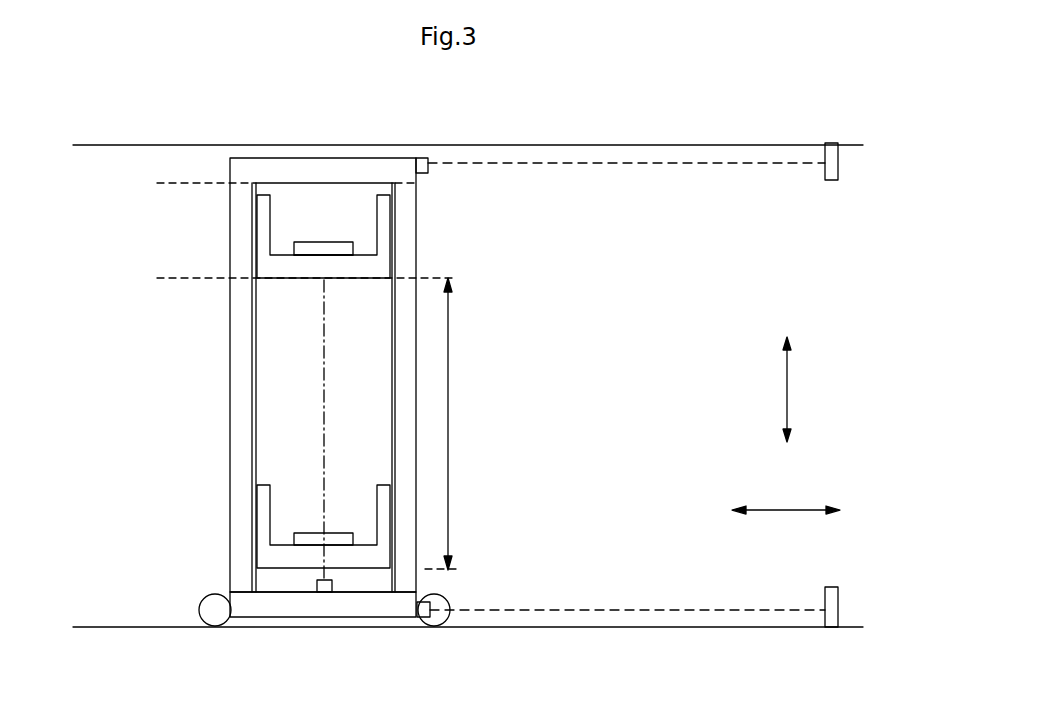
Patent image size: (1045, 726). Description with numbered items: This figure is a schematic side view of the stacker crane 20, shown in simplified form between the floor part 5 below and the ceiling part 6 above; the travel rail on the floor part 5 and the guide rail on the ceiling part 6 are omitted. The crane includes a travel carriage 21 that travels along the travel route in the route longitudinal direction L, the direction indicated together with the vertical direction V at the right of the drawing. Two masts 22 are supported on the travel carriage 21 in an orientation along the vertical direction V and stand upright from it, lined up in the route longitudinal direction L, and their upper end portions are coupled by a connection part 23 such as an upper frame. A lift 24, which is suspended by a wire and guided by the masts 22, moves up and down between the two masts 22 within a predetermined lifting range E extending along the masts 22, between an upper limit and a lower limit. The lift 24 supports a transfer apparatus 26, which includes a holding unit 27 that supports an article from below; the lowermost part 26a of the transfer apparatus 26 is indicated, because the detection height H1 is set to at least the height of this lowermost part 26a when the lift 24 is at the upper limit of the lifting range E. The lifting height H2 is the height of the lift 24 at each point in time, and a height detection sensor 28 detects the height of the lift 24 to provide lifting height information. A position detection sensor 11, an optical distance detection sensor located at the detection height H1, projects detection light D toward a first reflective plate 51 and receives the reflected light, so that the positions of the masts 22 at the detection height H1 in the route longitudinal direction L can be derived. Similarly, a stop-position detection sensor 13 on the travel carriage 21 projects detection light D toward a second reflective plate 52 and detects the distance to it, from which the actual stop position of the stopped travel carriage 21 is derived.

The floor part 5 is at (118, 625).
The ceiling part 6 is at (103, 147).
The position detection sensor 11 is at (425, 158).
The stop-position detection sensor 13 is at (423, 610).
The stacker crane 20 is at (200, 405).
The travel carriage 21 is at (287, 610).
The masts 22 is at (238, 493).
The connection part 23 is at (292, 165).
The lift 24 is at (287, 276).
The transfer apparatus 26 is at (368, 315).
The lowermost part of the transfer apparatus 26a is at (340, 268).
The holding unit 27 is at (328, 243).
The height detection sensor 28 is at (325, 593).
The first reflective plate 51 is at (838, 168).
The second reflective plate 52 is at (838, 600).
The detection height H1 is at (268, 184).
The lifting height H2 is at (288, 281).
The detection light D is at (327, 445).
The lifting range E is at (458, 426).
The vertical direction V is at (798, 389).
The route longitudinal direction L is at (786, 497).